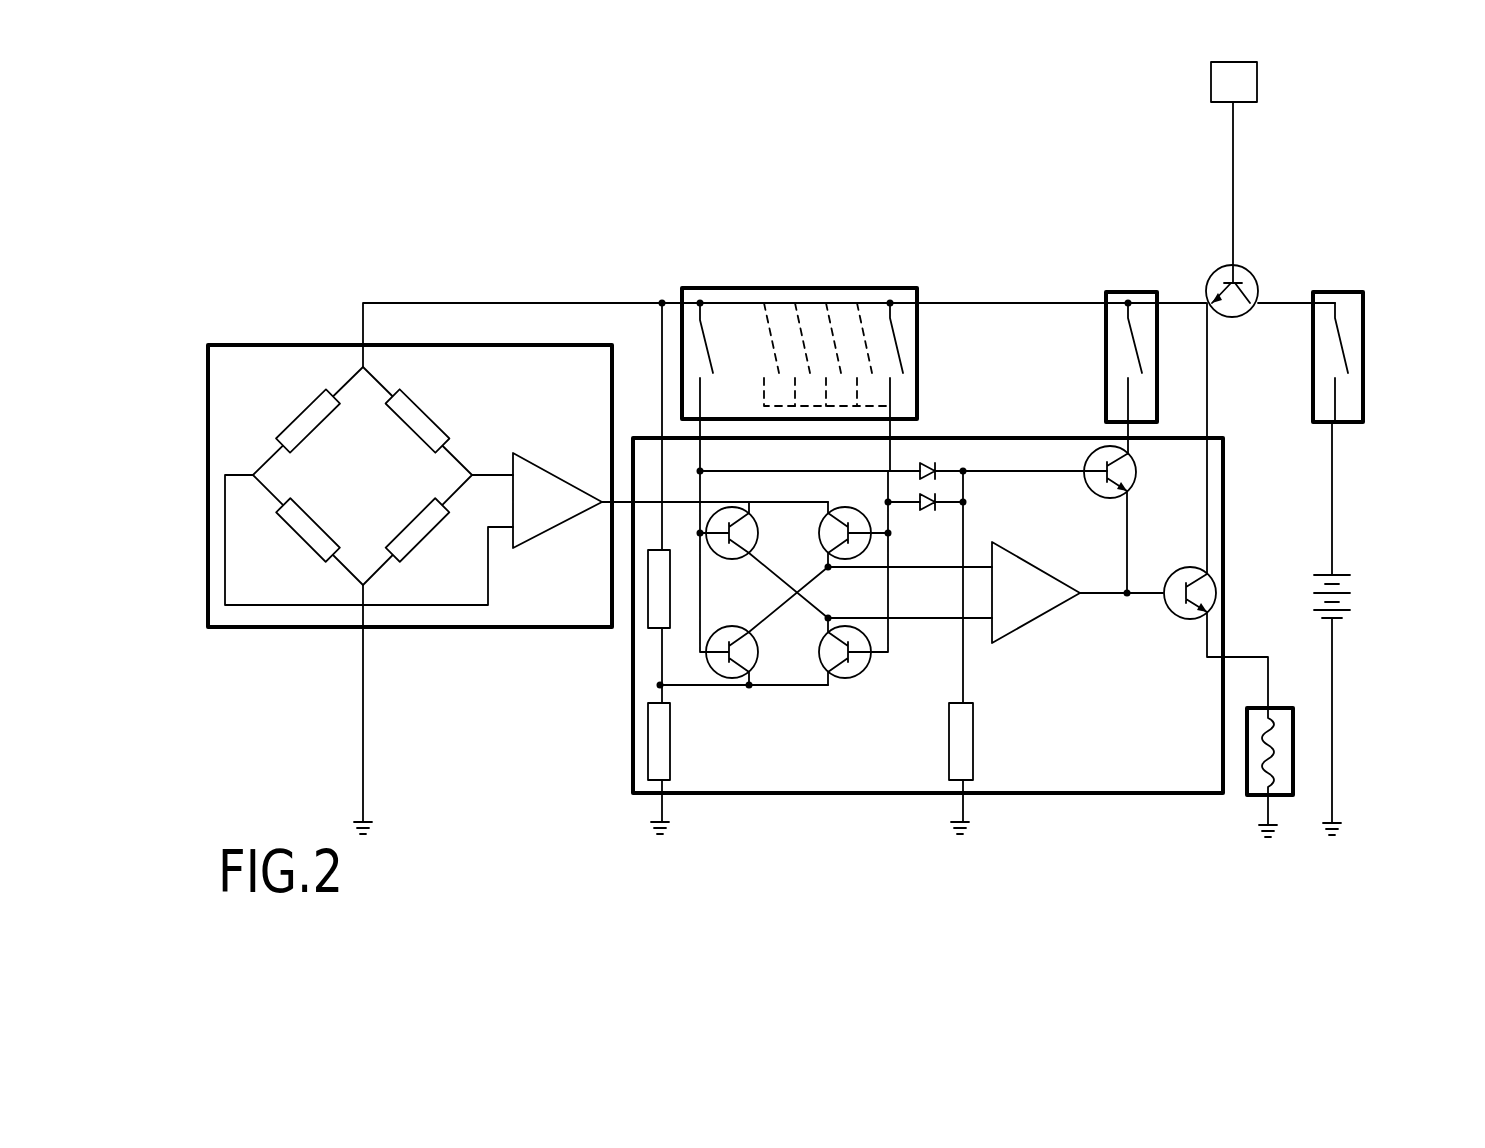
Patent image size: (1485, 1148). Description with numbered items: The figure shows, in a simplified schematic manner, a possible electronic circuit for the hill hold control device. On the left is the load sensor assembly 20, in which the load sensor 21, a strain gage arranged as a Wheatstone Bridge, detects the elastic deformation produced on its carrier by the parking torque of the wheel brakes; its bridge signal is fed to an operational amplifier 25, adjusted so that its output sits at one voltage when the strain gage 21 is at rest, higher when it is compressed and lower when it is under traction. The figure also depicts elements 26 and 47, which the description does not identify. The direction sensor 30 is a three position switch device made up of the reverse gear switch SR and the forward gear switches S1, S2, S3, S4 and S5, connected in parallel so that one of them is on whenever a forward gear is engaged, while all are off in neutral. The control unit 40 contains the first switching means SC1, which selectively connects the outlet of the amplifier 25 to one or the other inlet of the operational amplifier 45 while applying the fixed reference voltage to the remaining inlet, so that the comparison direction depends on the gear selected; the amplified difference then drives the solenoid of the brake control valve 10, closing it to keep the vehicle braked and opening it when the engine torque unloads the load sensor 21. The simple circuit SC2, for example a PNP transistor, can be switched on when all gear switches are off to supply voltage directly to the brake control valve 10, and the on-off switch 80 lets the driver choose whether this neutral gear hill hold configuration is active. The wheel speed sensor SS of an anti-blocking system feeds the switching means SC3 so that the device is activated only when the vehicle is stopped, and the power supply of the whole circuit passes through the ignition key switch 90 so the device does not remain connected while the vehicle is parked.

The brake control valve 10 is at (1246, 808).
The load sensor assembly 20 is at (268, 338).
The load sensor 21 is at (430, 405).
The operational amplifier 25 is at (530, 525).
The strain gauge resistor 26 is at (290, 418).
The direction sensor 30 is at (712, 272).
The control unit 40 is at (1043, 830).
The operational amplifier 45 is at (1027, 610).
The output transistor 47 is at (1177, 620).
The on-off switch 80 is at (1128, 280).
The ignition key switch 90 is at (1383, 350).
The reverse gear switch SR is at (718, 338).
The forward gear switch S1 is at (895, 302).
The forward gear switch S2 is at (857, 300).
The forward gear switch S3 is at (826, 300).
The forward gear switch S4 is at (795, 300).
The forward gear switch S5 is at (764, 300).
The first switching means SC1 is at (775, 705).
The simple circuit SC2 is at (1158, 488).
The switching means SC3 is at (1255, 258).
The wheel speed sensor SS is at (1234, 82).